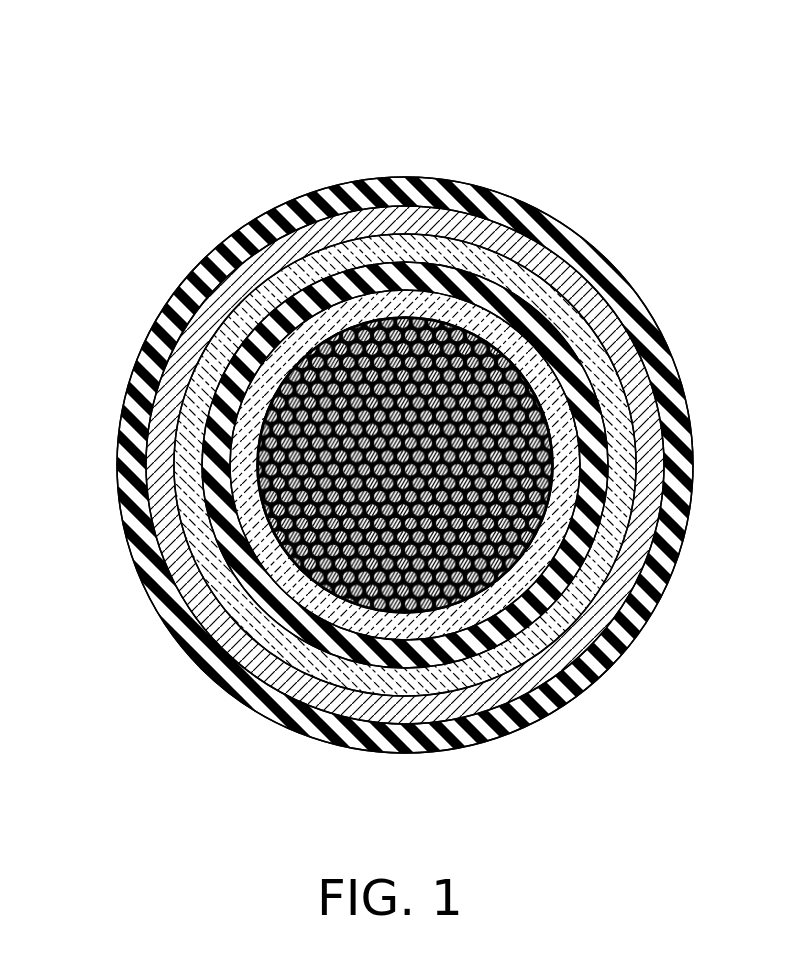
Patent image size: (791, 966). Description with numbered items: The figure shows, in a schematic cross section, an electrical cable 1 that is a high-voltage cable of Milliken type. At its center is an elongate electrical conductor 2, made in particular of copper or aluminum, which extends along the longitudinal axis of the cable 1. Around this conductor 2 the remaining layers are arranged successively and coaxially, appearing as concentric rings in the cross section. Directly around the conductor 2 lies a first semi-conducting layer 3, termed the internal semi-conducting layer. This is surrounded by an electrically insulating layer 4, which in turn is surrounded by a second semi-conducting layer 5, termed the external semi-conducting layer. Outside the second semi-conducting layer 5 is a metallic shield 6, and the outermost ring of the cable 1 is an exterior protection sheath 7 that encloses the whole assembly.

The electrical cable 1 is at (272, 120).
The electrical conductor 2 is at (472, 325).
The first semi-conducting layer 3 is at (282, 580).
The electrically insulating layer 4 is at (230, 550).
The second semi-conducting layer 5 is at (190, 470).
The metallic shield 6 is at (172, 390).
The exterior protection sheath 7 is at (193, 282).